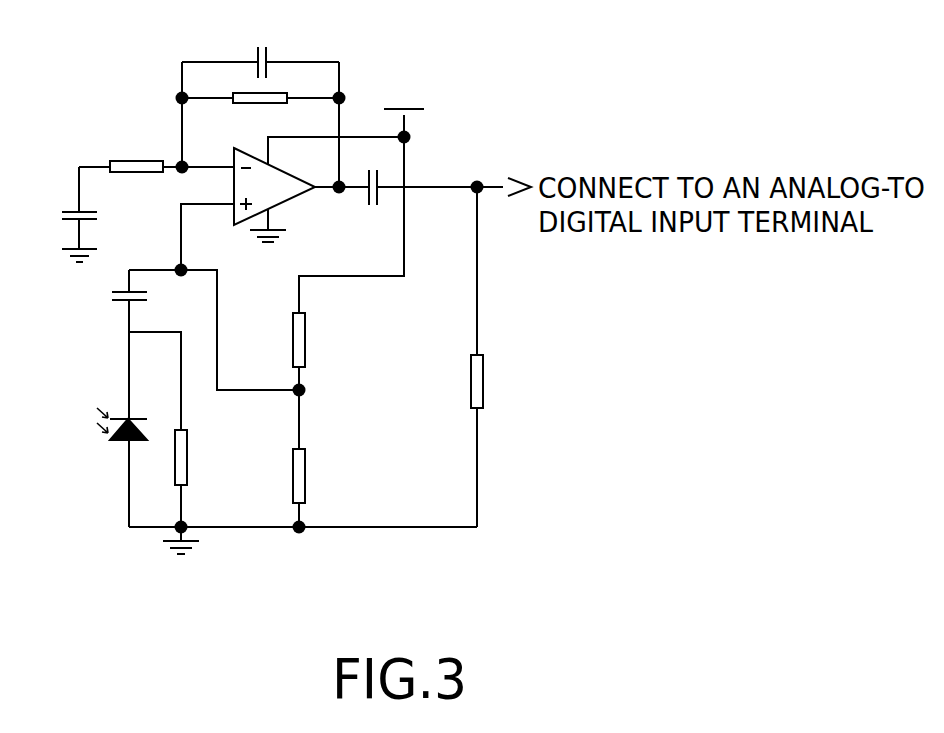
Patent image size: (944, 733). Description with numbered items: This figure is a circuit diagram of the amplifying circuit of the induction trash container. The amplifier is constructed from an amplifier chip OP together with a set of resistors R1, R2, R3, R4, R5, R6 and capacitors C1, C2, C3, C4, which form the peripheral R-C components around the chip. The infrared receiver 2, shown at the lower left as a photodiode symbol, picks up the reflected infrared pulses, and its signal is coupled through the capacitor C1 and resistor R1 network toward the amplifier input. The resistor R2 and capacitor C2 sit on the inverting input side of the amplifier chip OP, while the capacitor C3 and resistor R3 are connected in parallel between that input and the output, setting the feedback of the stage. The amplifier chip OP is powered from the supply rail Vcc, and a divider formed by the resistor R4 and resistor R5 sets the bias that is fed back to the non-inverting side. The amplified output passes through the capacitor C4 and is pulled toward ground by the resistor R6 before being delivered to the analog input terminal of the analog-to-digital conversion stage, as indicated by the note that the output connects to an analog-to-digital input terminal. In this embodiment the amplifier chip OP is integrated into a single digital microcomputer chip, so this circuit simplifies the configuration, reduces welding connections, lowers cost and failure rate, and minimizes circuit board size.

The infrared receiver 2 is at (105, 427).
The capacitance of amplifier circuit C1 is at (113, 300).
The capacitance of amplifier circuit C2 is at (62, 214).
The capacitance of amplifier circuit C3 is at (260, 46).
The capacitance of amplifier circuit C4 is at (374, 204).
The resistor of amplifier circuit R1 is at (201, 457).
The resistor of amplifier circuit R2 is at (156, 149).
The resistor of amplifier circuit R3 is at (260, 117).
The resistor of amplifier circuit R4 is at (322, 340).
The resistor of amplifier circuit R5 is at (322, 476).
The resistor of amplifier circuit R6 is at (501, 381).
The amplifier chip OP is at (274, 195).
The supply voltage Vcc is at (404, 90).